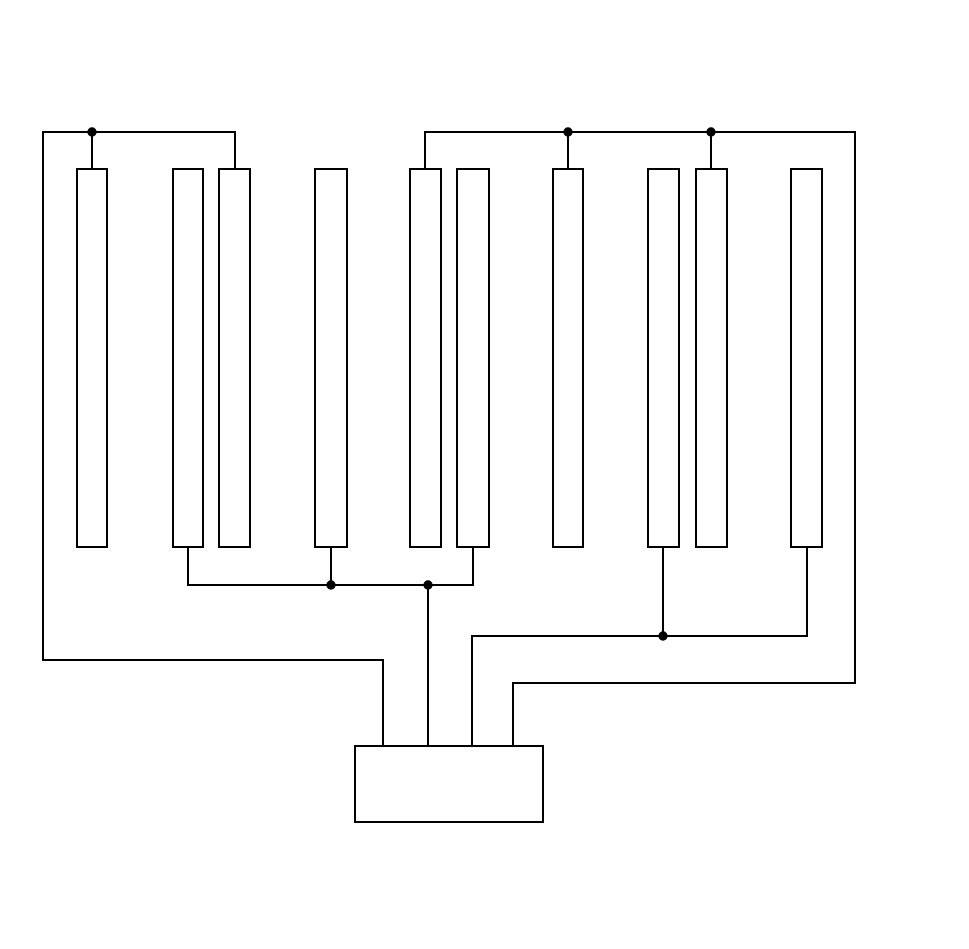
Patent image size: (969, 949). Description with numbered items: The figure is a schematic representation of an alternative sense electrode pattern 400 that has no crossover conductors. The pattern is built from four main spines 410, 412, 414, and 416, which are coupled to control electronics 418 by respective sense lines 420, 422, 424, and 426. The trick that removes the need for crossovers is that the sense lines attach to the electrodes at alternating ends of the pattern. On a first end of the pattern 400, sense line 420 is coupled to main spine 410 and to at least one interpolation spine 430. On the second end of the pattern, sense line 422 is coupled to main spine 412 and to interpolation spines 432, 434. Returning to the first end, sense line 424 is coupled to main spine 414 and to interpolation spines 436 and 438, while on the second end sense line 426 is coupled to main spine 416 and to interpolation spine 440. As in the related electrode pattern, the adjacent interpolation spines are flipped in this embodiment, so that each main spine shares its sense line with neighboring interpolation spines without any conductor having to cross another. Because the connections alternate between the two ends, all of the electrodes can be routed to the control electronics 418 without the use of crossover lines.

The sense electrode pattern 400 is at (761, 58).
The main spine 410 is at (108, 322).
The main spine 412 is at (348, 322).
The main spine 414 is at (584, 322).
The main spine 416 is at (790, 322).
The control electronics 418 is at (545, 782).
The sense line 420 is at (216, 661).
The sense line 422 is at (431, 621).
The sense line 424 is at (683, 685).
The sense line 426 is at (641, 639).
The interpolation spine 430 is at (251, 322).
The interpolation spine 432 is at (172, 360).
The interpolation spine 434 is at (490, 360).
The interpolation spine 436 is at (409, 360).
The interpolation spine 438 is at (728, 360).
The interpolation spine 440 is at (647, 360).